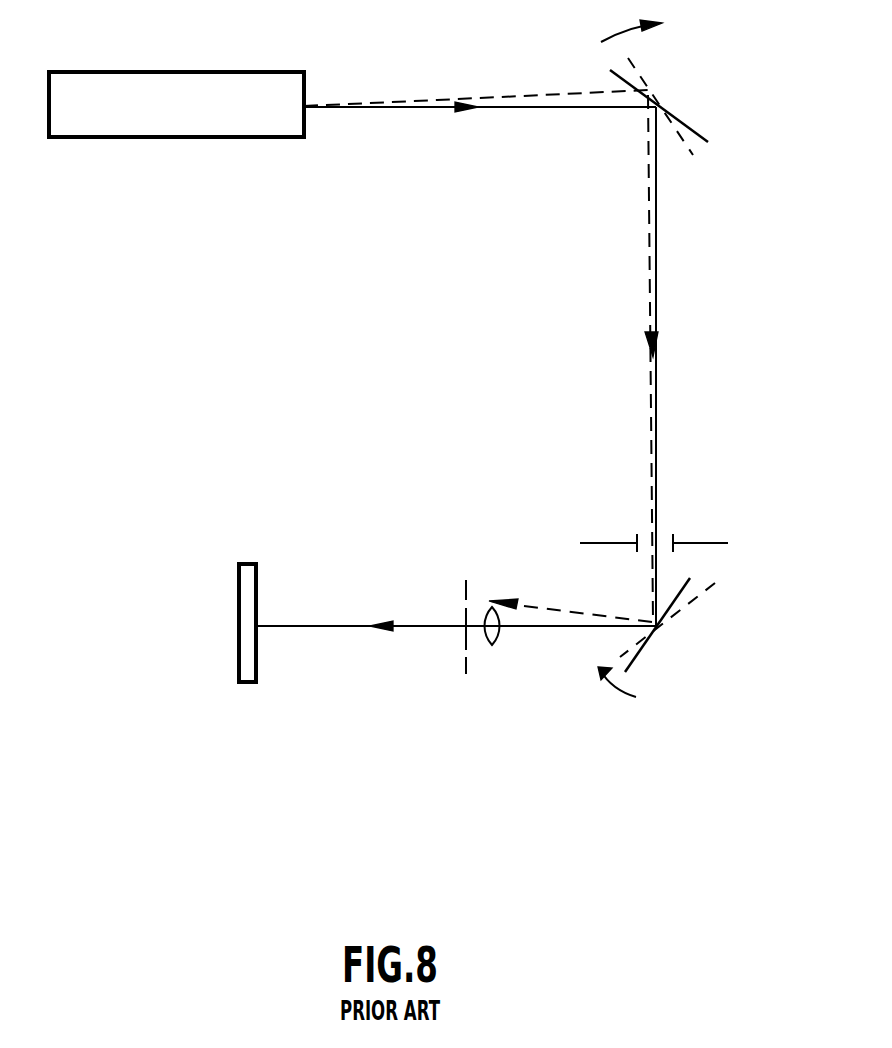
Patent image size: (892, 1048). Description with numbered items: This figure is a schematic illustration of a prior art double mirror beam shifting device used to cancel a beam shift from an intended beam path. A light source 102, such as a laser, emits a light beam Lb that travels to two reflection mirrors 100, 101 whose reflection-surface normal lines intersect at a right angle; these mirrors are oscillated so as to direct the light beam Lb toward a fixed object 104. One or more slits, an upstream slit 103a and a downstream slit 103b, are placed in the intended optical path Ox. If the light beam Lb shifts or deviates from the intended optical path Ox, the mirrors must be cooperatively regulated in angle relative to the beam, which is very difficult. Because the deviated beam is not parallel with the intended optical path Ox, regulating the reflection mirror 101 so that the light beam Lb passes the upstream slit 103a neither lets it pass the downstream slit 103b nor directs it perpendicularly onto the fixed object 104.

The reflection mirror 100 is at (700, 130).
The reflection mirror 101 is at (643, 652).
The light source 102 is at (85, 80).
The upstream slit 103a is at (712, 543).
The downstream slit 103b is at (466, 658).
The fixed object 104 is at (238, 665).
The light beam Lb is at (438, 100).
The intended optical path Ox is at (657, 313).